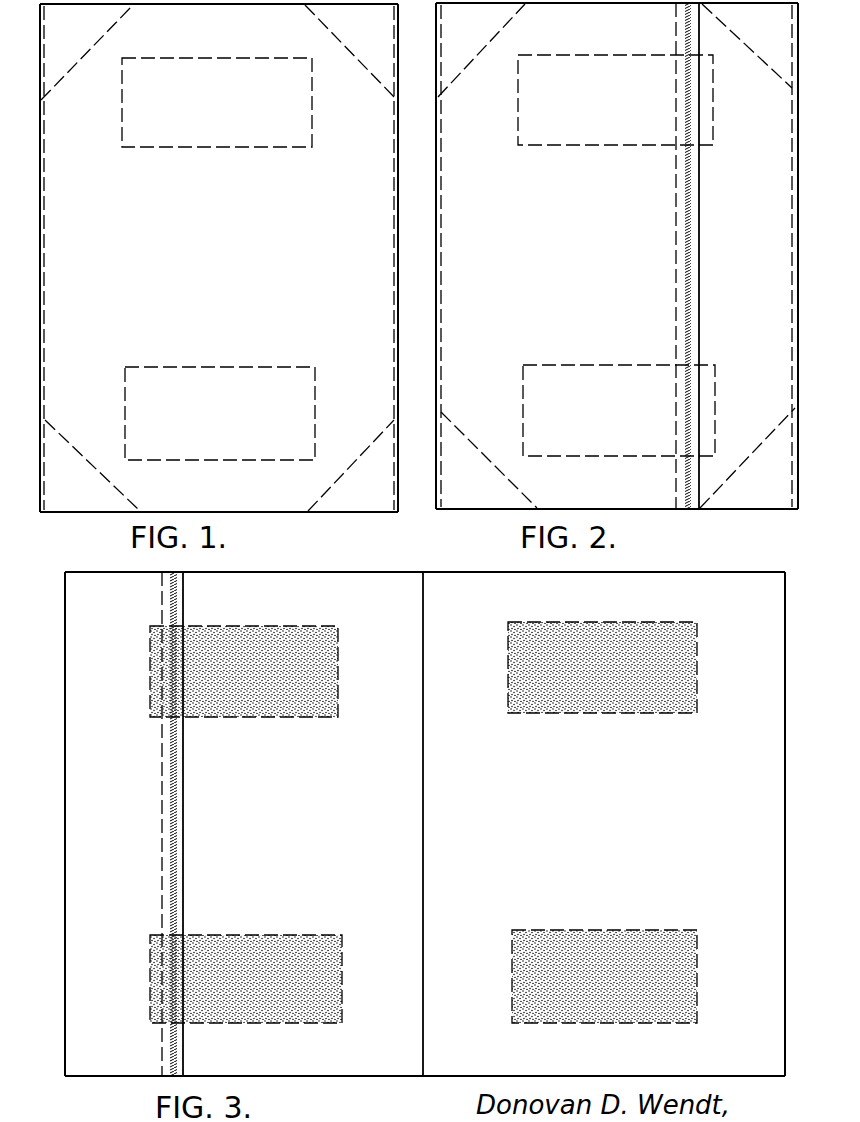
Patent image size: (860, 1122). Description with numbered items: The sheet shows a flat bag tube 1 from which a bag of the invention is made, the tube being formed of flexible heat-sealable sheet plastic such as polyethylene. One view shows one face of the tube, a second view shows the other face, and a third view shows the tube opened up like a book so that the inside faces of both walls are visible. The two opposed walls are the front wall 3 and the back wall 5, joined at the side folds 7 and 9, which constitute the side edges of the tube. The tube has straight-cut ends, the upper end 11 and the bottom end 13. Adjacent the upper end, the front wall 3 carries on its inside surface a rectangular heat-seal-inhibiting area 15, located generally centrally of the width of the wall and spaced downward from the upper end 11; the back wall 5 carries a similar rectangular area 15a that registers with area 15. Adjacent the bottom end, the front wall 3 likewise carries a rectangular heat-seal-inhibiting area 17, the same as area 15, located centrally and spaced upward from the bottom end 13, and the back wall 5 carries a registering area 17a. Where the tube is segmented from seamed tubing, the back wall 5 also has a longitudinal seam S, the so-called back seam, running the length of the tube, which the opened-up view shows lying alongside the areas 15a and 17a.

In FIG. 1, the bag tube 1 is at (68, 515).
In FIG. 2, the bag tube 1 is at (488, 514).
In FIG. 3, the bag tube 1 is at (425, 824).
In FIG. 1, the front wall 3 is at (206, 268).
In FIG. 3, the front wall 3 is at (612, 834).
In FIG. 2, the back wall 5 is at (627, 268).
In FIG. 3, the back wall 5 is at (242, 834).
In FIG. 1, the side fold 7 is at (42, 248).
In FIG. 2, the side fold 7 is at (797, 219).
In FIG. 1, the side fold 9 is at (399, 299).
In FIG. 2, the side fold 9 is at (435, 222).
In FIG. 3, the side fold 9 is at (424, 769).
In FIG. 1, the upper end 11 is at (246, 6).
In FIG. 2, the upper end 11 is at (577, 5).
In FIG. 3, the upper end 11 is at (467, 572).
In FIG. 1, the bottom end 13 is at (280, 513).
In FIG. 2, the bottom end 13 is at (732, 511).
In FIG. 3, the bottom end 13 is at (92, 1080).
In FIG. 1, the heat-seal-inhibiting area 15 is at (227, 148).
In FIG. 3, the heat-seal-inhibiting area 15 is at (629, 713).
In FIG. 2, the heat-seal-inhibiting area 15a is at (608, 145).
In FIG. 3, the heat-seal-inhibiting area 15a is at (270, 717).
In FIG. 1, the heat-seal-inhibiting area 17 is at (208, 364).
In FIG. 3, the heat-seal-inhibiting area 17 is at (555, 930).
In FIG. 2, the heat-seal-inhibiting area 17a is at (615, 362).
In FIG. 3, the heat-seal-inhibiting area 17a is at (250, 934).
In FIG. 2, the longitudinal seam S is at (690, 193).
In FIG. 3, the longitudinal seam S is at (175, 810).